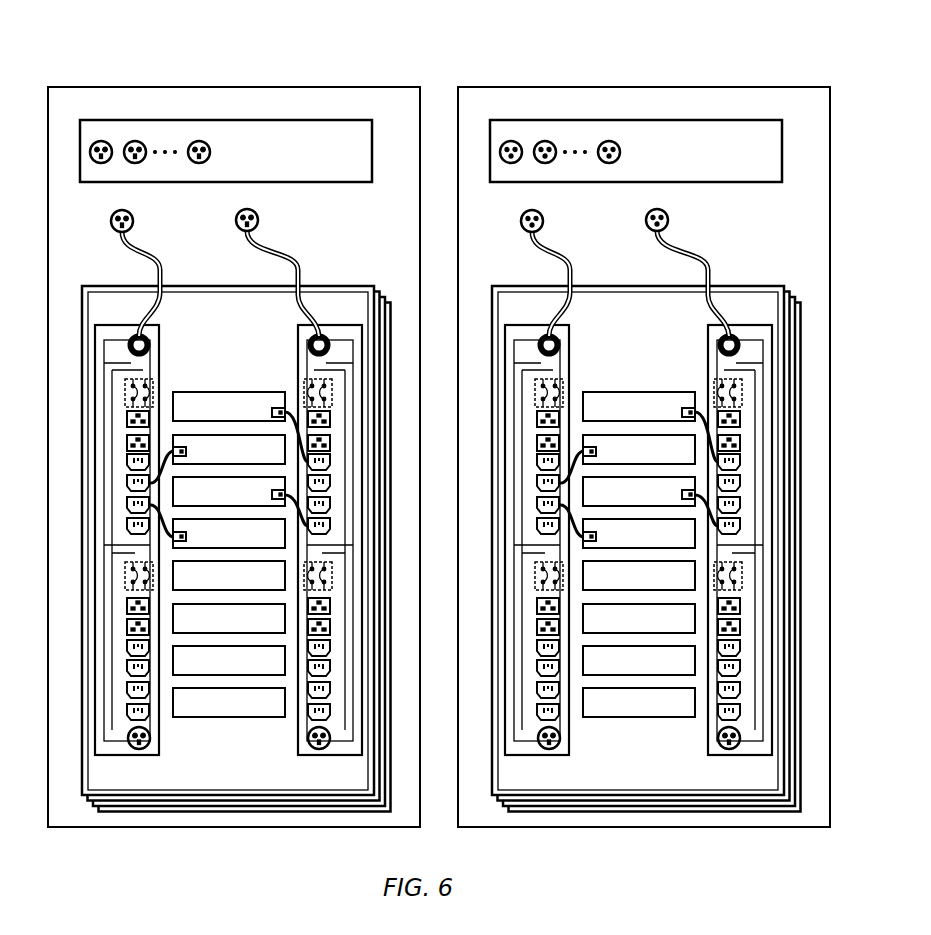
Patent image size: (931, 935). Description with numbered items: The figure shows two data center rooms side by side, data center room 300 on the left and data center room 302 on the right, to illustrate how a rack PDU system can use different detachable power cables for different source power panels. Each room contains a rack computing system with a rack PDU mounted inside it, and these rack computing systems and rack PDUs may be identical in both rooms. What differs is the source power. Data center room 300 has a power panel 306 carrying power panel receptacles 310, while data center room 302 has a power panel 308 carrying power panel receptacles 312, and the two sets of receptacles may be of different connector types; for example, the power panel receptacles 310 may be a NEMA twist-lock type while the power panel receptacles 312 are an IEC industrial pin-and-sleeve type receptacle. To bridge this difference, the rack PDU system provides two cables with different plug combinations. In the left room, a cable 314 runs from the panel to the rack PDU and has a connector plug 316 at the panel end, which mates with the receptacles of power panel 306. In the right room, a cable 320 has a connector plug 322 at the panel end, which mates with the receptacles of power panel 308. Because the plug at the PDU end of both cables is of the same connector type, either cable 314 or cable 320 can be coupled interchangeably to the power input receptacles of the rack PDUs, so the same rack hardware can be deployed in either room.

The data center room 300 is at (334, 66).
The data center room 302 is at (644, 422).
The power panel 306 is at (362, 178).
The power panel 308 is at (636, 137).
The power panel receptacle 310 is at (101, 141).
The power panel receptacle 312 is at (511, 127).
The cable 314 is at (165, 268).
The connector plug 316 is at (111, 221).
The cable 320 is at (580, 284).
The connector plug 322 is at (505, 222).